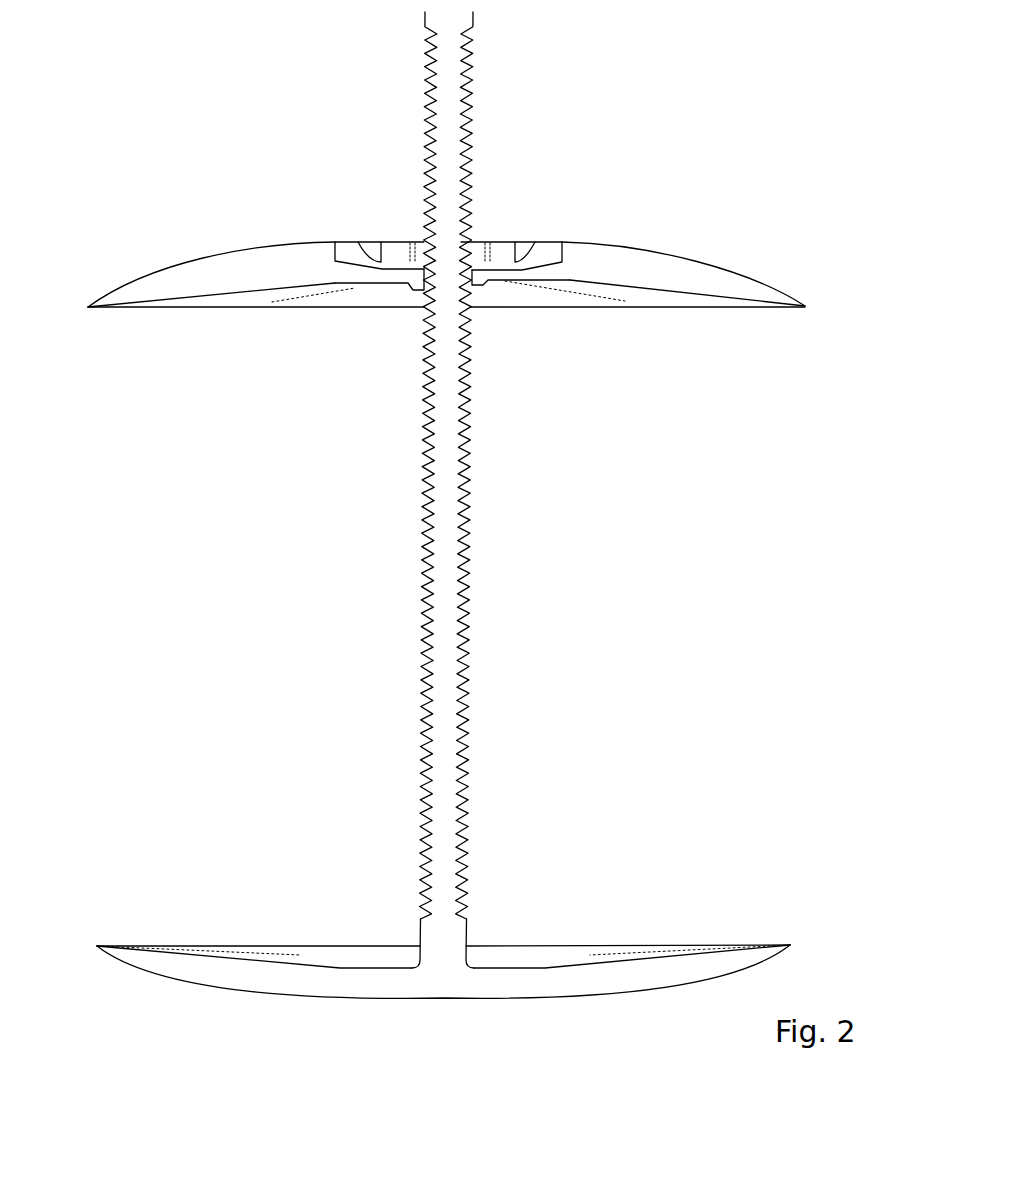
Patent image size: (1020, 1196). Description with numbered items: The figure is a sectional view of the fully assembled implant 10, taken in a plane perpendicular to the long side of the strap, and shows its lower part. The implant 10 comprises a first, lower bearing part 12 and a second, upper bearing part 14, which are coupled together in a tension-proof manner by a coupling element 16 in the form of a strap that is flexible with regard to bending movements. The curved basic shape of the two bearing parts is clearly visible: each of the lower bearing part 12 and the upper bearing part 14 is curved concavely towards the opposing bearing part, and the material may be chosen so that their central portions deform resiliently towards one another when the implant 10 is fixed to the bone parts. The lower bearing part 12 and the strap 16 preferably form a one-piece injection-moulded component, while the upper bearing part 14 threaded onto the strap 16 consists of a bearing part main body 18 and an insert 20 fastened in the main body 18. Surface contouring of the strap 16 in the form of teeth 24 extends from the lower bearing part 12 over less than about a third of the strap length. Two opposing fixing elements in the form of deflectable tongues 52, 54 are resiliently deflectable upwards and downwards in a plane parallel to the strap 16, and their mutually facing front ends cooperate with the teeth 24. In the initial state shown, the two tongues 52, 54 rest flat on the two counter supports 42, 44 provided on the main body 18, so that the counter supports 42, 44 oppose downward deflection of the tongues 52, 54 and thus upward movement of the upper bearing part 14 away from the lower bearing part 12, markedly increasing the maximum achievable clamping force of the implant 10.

The implant 10 is at (167, 125).
The lower bearing part 12 is at (243, 905).
The upper bearing part 14 is at (216, 336).
The coupling element 16 is at (455, 72).
The bearing part main body 18 is at (186, 285).
The insert 20 is at (350, 261).
The teeth 24 is at (467, 583).
The counter support 42 is at (388, 279).
The counter support 44 is at (500, 277).
The deflectable tongue 52 is at (400, 262).
The deflectable tongue 54 is at (490, 265).